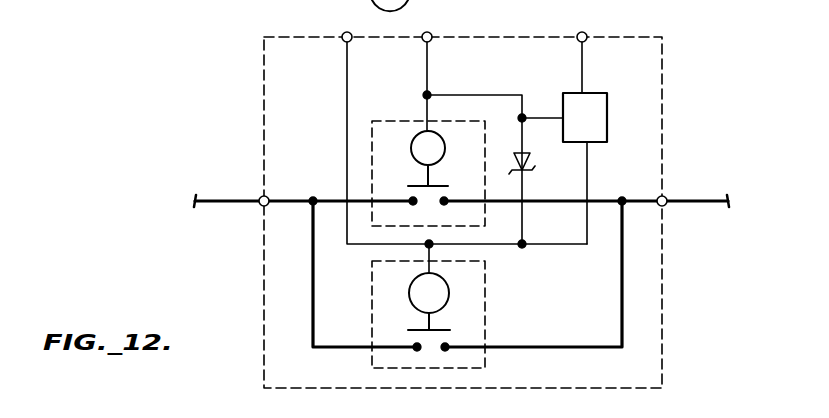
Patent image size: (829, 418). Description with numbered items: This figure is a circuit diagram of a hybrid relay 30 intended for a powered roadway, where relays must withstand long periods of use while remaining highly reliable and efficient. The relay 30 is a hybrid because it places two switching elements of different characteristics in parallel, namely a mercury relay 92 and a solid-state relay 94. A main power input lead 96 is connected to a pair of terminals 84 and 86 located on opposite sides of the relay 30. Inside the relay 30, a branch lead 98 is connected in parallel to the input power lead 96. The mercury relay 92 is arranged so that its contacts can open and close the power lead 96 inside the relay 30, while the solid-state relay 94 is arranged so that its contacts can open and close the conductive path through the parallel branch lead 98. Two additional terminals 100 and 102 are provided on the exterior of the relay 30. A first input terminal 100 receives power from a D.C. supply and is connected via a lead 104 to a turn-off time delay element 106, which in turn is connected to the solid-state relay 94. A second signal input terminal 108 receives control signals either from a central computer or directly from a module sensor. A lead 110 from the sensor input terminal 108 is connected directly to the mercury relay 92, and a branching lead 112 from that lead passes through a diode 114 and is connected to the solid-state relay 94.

The relay 30 is at (662, 103).
The terminal 84 is at (262, 197).
The terminal 86 is at (665, 197).
The mercury relay 92 is at (400, 118).
The solid-state relay 94 is at (486, 305).
The main power input lead 96 is at (243, 207).
The branch lead 98 is at (310, 322).
The first input terminal 100 is at (585, 33).
The terminal 102 is at (346, 33).
The lead 104 is at (584, 76).
The turn-off time delay element 106 is at (605, 138).
The second signal input terminal 108 is at (430, 33).
The lead 110 is at (428, 66).
The branching lead 112 is at (497, 95).
The diode 114 is at (530, 165).